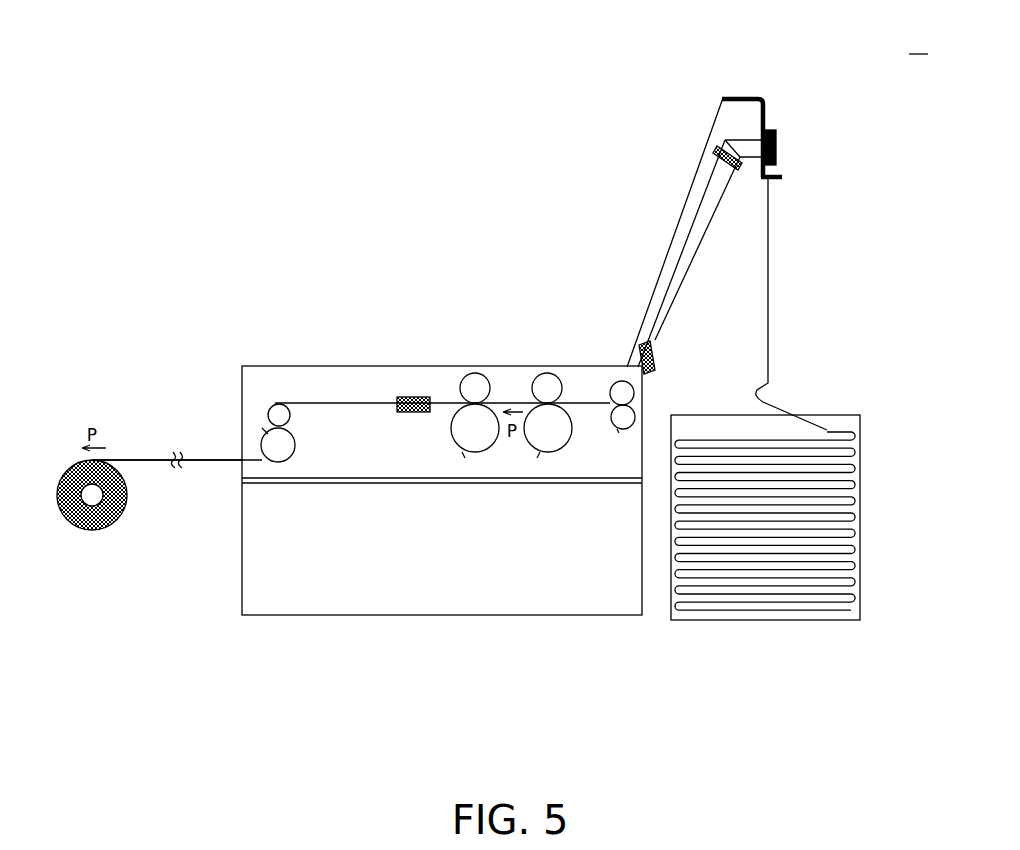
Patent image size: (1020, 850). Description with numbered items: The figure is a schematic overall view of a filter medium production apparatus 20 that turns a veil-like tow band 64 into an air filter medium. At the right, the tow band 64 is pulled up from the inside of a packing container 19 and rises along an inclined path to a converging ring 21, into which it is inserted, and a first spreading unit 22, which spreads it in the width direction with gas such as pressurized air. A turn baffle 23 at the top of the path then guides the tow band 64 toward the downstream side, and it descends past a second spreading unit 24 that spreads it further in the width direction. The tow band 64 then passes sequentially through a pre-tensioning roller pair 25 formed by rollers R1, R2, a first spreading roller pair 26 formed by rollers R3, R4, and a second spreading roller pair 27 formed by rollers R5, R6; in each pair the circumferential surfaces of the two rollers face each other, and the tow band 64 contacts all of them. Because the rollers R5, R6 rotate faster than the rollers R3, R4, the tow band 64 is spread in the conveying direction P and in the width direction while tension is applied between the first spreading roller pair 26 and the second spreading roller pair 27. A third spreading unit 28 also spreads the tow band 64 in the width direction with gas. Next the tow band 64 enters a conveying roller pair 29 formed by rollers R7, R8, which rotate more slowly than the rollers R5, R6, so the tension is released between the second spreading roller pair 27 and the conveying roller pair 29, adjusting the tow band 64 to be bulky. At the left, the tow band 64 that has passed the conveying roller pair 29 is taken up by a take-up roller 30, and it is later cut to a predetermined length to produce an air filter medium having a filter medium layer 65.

The packing container 19 is at (862, 455).
The filter medium production apparatus 20 is at (918, 45).
The converging ring 21 is at (783, 178).
The first spreading unit 22 is at (780, 148).
The turn baffle 23 is at (752, 94).
The second spreading unit 24 is at (656, 356).
The pre-tensioning roller pair 25 is at (617, 432).
The first spreading roller pair 26 is at (540, 458).
The second spreading roller pair 27 is at (462, 458).
The third spreading unit 28 is at (412, 397).
The conveying roller pair 29 is at (263, 430).
The take-up roller 30 is at (98, 530).
The tow band 64 is at (769, 282).
The filter medium layer 65 is at (160, 462).
The roller R1 is at (616, 382).
The roller R2 is at (648, 410).
The roller R3 is at (550, 373).
The roller R4 is at (565, 457).
The roller R5 is at (475, 373).
The roller R6 is at (490, 457).
The roller R7 is at (280, 404).
The roller R8 is at (297, 455).